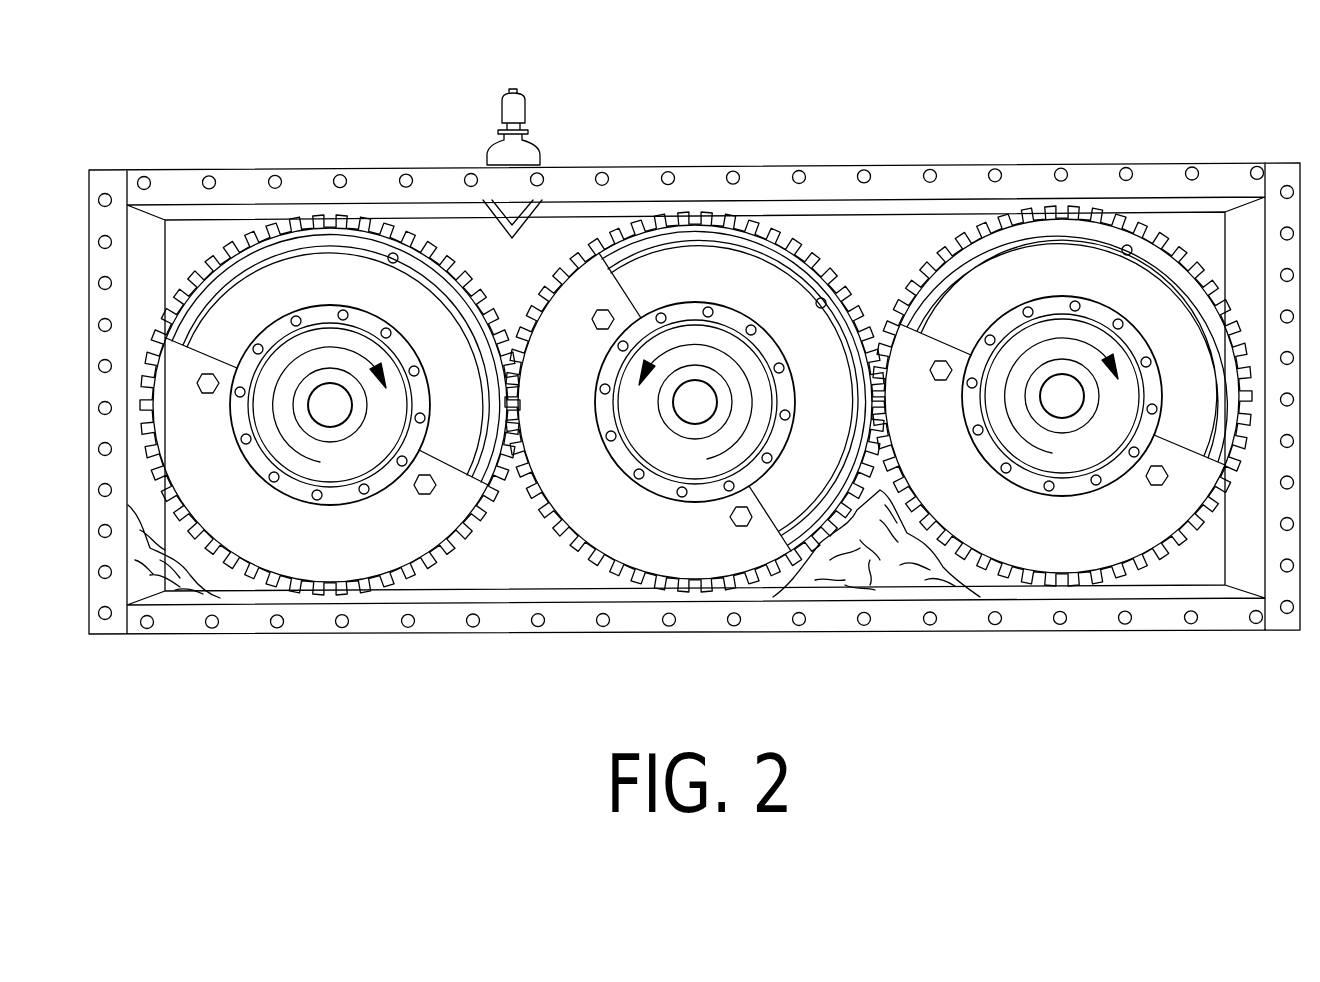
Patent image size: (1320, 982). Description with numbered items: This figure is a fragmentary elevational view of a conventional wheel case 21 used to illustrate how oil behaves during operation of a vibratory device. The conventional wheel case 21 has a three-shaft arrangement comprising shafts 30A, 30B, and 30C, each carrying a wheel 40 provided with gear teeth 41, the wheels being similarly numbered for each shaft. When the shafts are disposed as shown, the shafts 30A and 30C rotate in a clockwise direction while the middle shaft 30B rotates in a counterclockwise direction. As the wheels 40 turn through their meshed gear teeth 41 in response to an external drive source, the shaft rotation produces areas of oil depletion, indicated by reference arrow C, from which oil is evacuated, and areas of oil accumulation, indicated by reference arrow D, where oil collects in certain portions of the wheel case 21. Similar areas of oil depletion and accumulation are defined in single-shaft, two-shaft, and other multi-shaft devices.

The conventional wheel case 21 is at (270, 638).
The shaft 30A is at (340, 370).
The shaft 30B is at (695, 368).
The shaft 30C is at (1062, 366).
The wheel 40 is at (378, 240).
The gear teeth 41 is at (247, 232).
The areas of oil depletion C is at (480, 538).
The areas of oil accumulation D is at (158, 595).